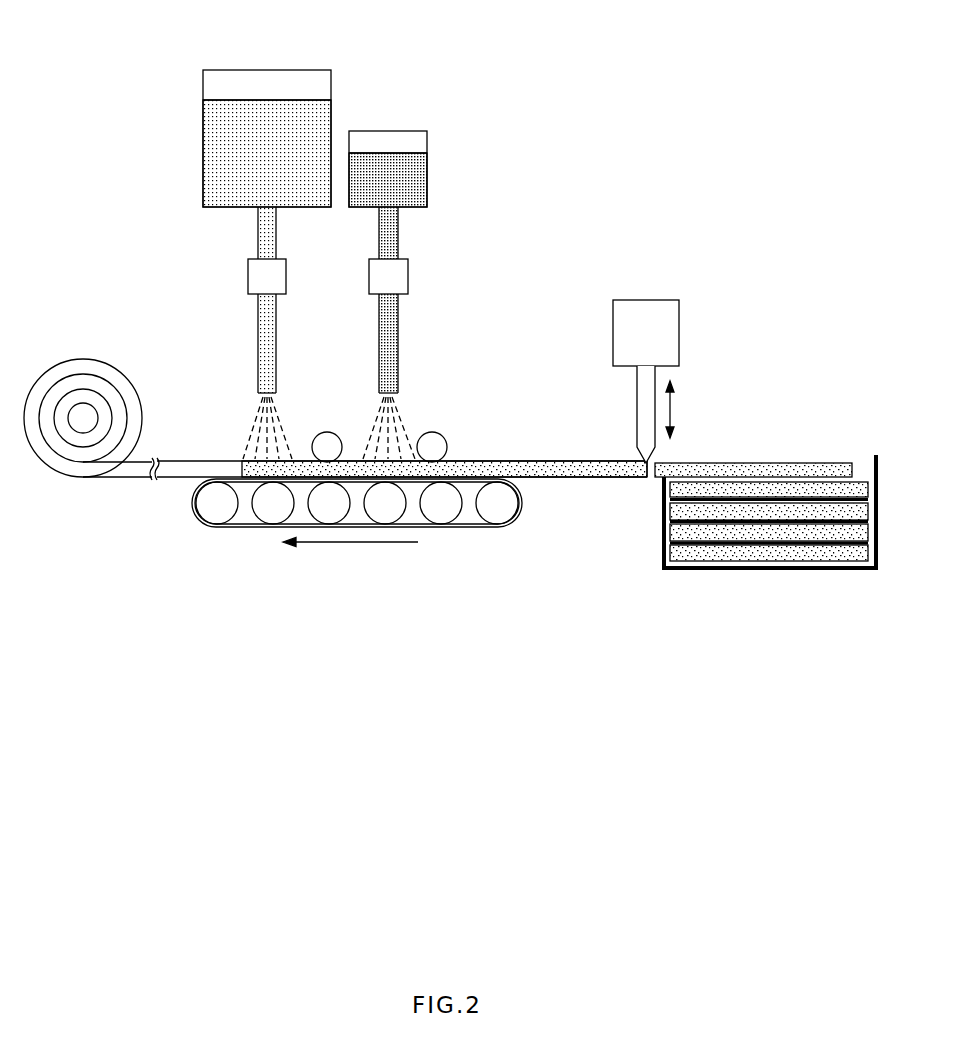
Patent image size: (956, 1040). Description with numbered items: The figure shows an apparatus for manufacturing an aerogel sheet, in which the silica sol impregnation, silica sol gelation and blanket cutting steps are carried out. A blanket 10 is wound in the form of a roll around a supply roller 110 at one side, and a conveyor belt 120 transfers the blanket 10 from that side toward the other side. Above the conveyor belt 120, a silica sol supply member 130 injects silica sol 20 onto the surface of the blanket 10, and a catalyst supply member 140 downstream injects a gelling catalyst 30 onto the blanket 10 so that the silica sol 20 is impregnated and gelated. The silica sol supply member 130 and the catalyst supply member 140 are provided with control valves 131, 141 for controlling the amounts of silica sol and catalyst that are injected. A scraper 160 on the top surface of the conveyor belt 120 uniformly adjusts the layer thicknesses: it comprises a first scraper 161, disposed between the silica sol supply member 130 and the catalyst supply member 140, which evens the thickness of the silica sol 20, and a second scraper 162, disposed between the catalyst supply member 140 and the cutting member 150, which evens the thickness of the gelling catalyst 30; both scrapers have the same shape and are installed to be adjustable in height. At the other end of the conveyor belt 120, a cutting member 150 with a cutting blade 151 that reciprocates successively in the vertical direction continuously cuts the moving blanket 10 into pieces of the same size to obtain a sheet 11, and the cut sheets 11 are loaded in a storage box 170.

The blanket 10 is at (179, 460).
The sheet 11 is at (752, 461).
The silica sol 20 is at (207, 141).
The gelling catalyst 30 is at (428, 166).
The supply roller 110 is at (83, 418).
The conveyor belt 120 is at (198, 522).
The silica sol supply member 130 is at (249, 236).
The control valve 131 is at (286, 277).
The catalyst supply member 140 is at (416, 267).
The control valve 141 is at (408, 277).
The cutting member 150 is at (659, 381).
The cutting blade 151 is at (637, 405).
The scraper 160 is at (392, 398).
The first scraper 161 is at (338, 436).
The second scraper 162 is at (438, 433).
The storage box 170 is at (768, 566).